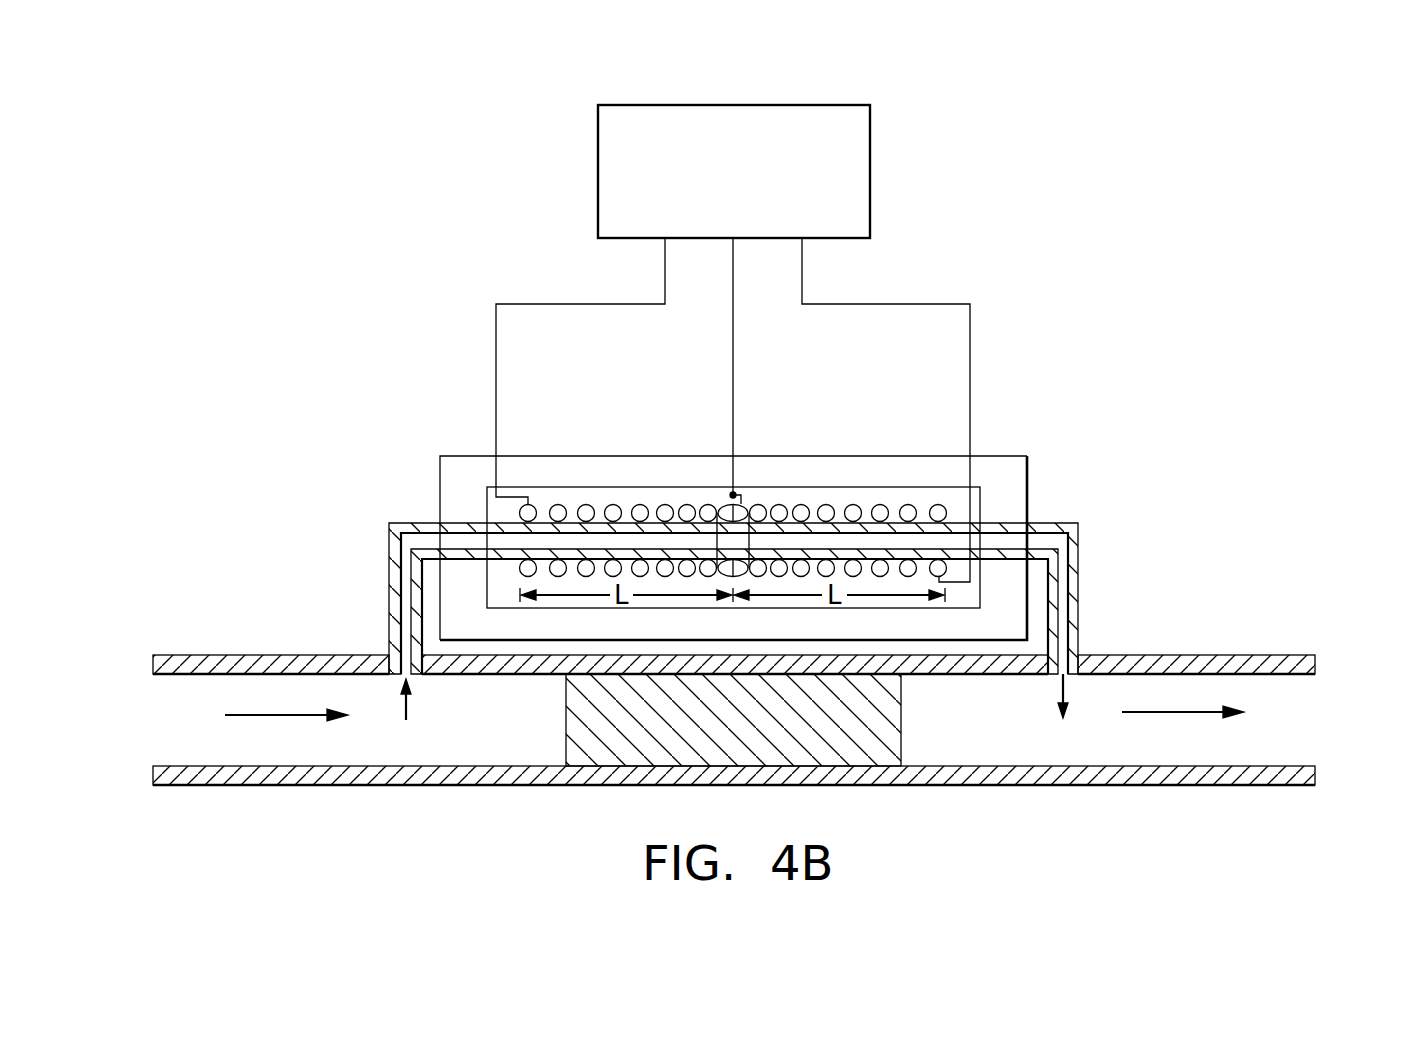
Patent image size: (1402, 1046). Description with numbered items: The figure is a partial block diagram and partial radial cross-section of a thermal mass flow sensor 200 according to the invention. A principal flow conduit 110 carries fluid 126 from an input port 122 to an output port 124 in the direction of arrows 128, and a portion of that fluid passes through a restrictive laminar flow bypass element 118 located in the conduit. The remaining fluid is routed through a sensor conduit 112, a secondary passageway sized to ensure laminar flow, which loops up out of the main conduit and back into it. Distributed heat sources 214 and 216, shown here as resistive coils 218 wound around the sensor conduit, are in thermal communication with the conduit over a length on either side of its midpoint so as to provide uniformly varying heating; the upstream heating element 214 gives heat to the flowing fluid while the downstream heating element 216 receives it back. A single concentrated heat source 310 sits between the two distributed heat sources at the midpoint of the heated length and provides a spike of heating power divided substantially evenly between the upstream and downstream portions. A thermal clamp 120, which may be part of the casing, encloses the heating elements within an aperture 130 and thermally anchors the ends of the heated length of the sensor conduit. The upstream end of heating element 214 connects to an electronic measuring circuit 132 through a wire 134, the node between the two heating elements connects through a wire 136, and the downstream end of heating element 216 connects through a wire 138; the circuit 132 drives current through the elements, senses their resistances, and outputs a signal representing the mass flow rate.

The principal flow conduit 110 is at (1011, 785).
The sensor conduit 112 is at (1078, 562).
The laminar flow bypass element 118 is at (901, 718).
The thermal clamp 120 is at (1008, 456).
The input port 122 is at (168, 722).
The output port 124 is at (1297, 720).
The fluid 126 is at (514, 734).
The arrows 128 is at (284, 716).
The aperture 130 is at (696, 487).
The electronic measuring circuit 132 is at (756, 185).
The wire 134 is at (496, 378).
The wire 136 is at (733, 378).
The wire 138 is at (970, 330).
The mass flow sensor 200 is at (510, 841).
The upstream heating element 214 is at (560, 504).
The downstream heating element 216 is at (906, 504).
The resistive coils 218 is at (934, 473).
The concentrated heat source 310 is at (742, 541).